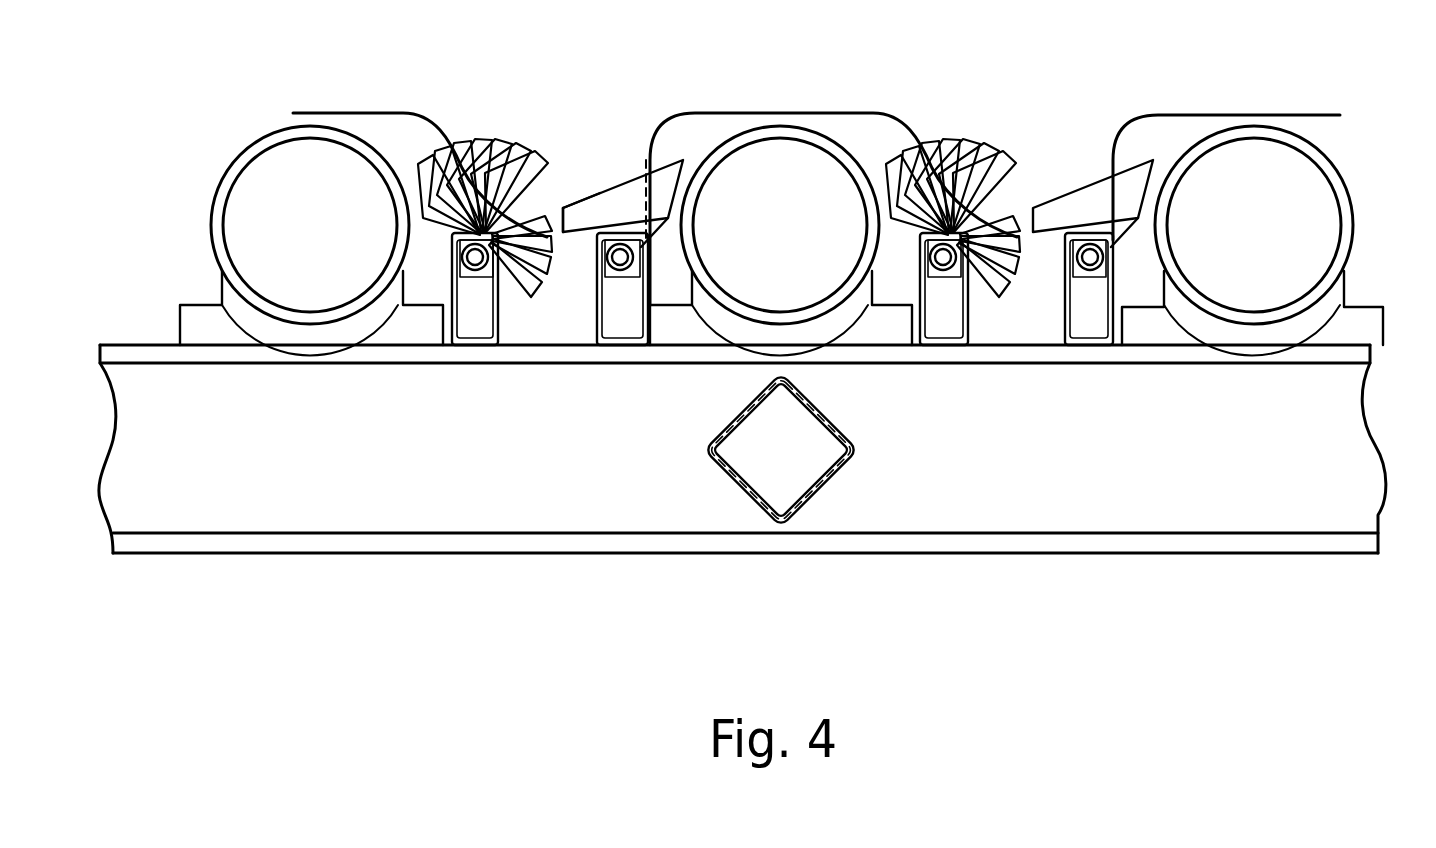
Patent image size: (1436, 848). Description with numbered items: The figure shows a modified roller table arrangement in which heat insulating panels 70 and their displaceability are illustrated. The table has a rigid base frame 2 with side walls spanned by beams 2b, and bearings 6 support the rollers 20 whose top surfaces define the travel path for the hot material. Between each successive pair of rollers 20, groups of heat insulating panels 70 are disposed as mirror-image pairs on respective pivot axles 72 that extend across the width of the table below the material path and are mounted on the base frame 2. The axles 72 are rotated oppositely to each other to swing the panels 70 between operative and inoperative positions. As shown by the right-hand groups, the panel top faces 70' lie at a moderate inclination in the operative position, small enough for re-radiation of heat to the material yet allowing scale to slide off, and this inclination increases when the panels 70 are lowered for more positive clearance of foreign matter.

The base frame 2 is at (1092, 463).
The beam 2b is at (835, 426).
The bearing 6 is at (1140, 130).
The roller 20 is at (1303, 200).
The heat insulating panel 70 is at (623, 166).
The panel top face 70' is at (570, 158).
The pivot axle 72 is at (620, 264).